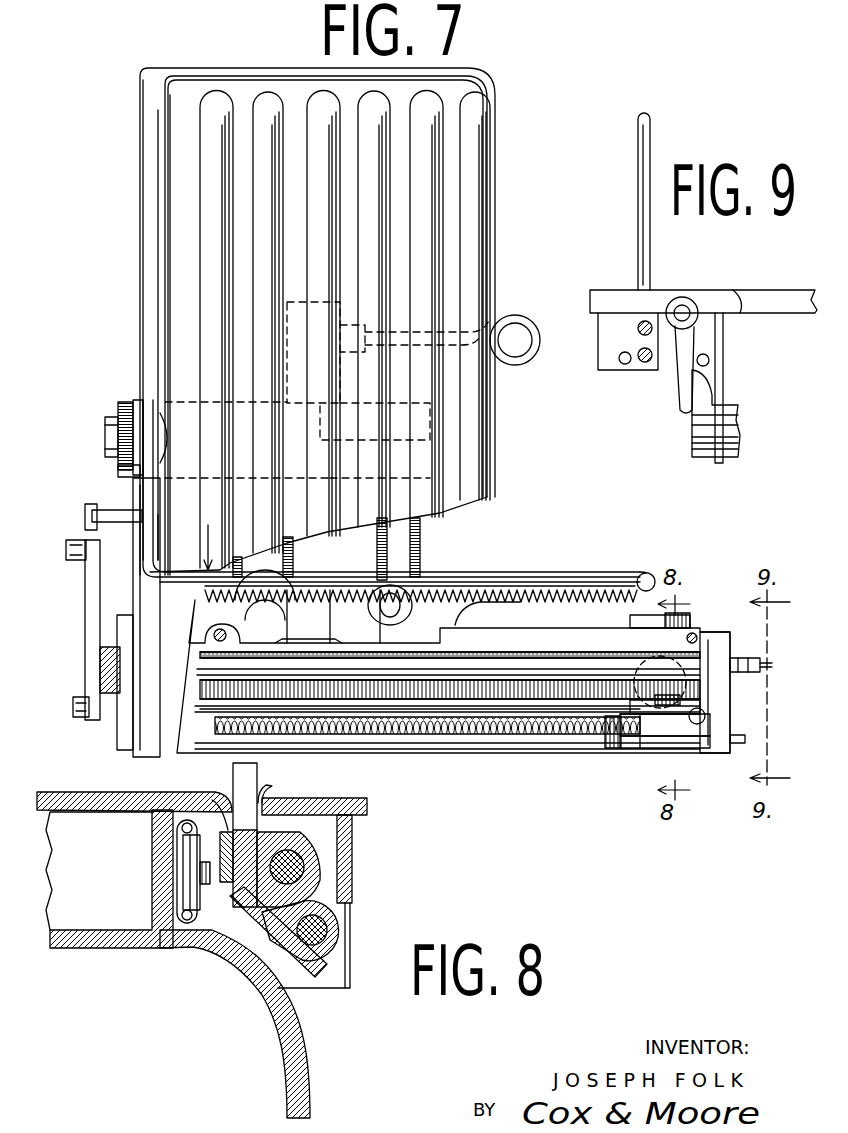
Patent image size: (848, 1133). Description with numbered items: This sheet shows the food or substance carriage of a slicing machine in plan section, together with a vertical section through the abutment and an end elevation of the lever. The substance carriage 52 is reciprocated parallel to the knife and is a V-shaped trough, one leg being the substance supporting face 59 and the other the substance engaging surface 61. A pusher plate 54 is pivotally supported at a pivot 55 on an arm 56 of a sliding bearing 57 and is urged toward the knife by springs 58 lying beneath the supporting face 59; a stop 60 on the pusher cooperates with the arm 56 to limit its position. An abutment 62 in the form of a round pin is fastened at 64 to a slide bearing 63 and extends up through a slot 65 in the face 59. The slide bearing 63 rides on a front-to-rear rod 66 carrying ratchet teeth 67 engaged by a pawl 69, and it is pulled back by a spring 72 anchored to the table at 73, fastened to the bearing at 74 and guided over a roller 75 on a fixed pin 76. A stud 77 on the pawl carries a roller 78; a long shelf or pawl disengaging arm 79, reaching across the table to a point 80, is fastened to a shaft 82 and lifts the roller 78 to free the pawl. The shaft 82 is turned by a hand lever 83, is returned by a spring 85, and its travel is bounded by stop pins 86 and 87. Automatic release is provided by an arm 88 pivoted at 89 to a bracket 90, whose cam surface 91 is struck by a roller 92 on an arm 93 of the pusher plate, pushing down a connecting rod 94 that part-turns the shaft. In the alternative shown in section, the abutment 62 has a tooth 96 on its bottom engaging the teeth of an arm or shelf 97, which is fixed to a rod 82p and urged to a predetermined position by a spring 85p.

In FIG. 7, the substance carriage 52 is at (485, 490).
In FIG. 9, the substance carriage 52 is at (780, 290).
In FIG. 8, the substance carriage 52 is at (332, 806).
In FIG. 7, the pusher plate 54 is at (156, 508).
In FIG. 7, the pivot 55 is at (138, 405).
In FIG. 7, the arm 56 is at (120, 402).
In FIG. 7, the sliding bearing 57 is at (287, 322).
In FIG. 7, the springs 58 is at (245, 563).
In FIG. 7, the substance supporting face 59 is at (485, 215).
In FIG. 8, the substance supporting face 59 is at (150, 795).
In FIG. 7, the stop 60 is at (112, 458).
In FIG. 7, the substance engaging surface 61 is at (150, 212).
In FIG. 9, the abutment 62 is at (648, 128).
In FIG. 8, the abutment 62 is at (257, 770).
In FIG. 8, the slide bearing 63 is at (262, 848).
In FIG. 8, the fastening point 64 is at (238, 898).
In FIG. 8, the slot 65 is at (268, 790).
In FIG. 7, the rod 66 is at (338, 735).
In FIG. 8, the rod 66 is at (300, 868).
In FIG. 7, the ratchet teeth 67 is at (613, 745).
In FIG. 7, the pawl 69 is at (700, 735).
In FIG. 7, the spring 72 is at (540, 660).
In FIG. 8, the spring 72 is at (177, 830).
In FIG. 7, the spring anchor point 73 is at (205, 654).
In FIG. 7, the spring attachment point 74 is at (630, 707).
In FIG. 7, the roller 75 is at (680, 655).
In FIG. 8, the roller 75 is at (187, 852).
In FIG. 7, the pin 76 is at (650, 665).
In FIG. 8, the pin 76 is at (222, 805).
In FIG. 7, the stud 77 is at (660, 724).
In FIG. 7, the roller 78 is at (705, 700).
In FIG. 7, the pawl disengaging arm 79 is at (430, 700).
In FIG. 7, the end point of shelf 80 is at (212, 690).
In FIG. 7, the shaft 82 is at (482, 660).
In FIG. 9, the shaft 82 is at (683, 310).
In FIG. 8, the rod 82p is at (325, 932).
In FIG. 7, the hand lever 83 is at (762, 665).
In FIG. 9, the hand lever 83 is at (680, 410).
In FIG. 7, the spring 85 is at (100, 660).
In FIG. 8, the spring 85p is at (318, 914).
In FIG. 9, the stop pin 86 is at (709, 358).
In FIG. 9, the stop pin 87 is at (622, 364).
In FIG. 7, the arm 88 is at (86, 592).
In FIG. 7, the pivot 89 is at (75, 712).
In FIG. 7, the bracket 90 is at (117, 730).
In FIG. 7, the cam surface 91 is at (66, 548).
In FIG. 7, the roller 92 is at (95, 510).
In FIG. 7, the arm 93 is at (155, 540).
In FIG. 7, the connecting rod 94 is at (85, 522).
In FIG. 8, the tooth 96 is at (205, 948).
In FIG. 8, the arm or shelf 97 is at (236, 915).